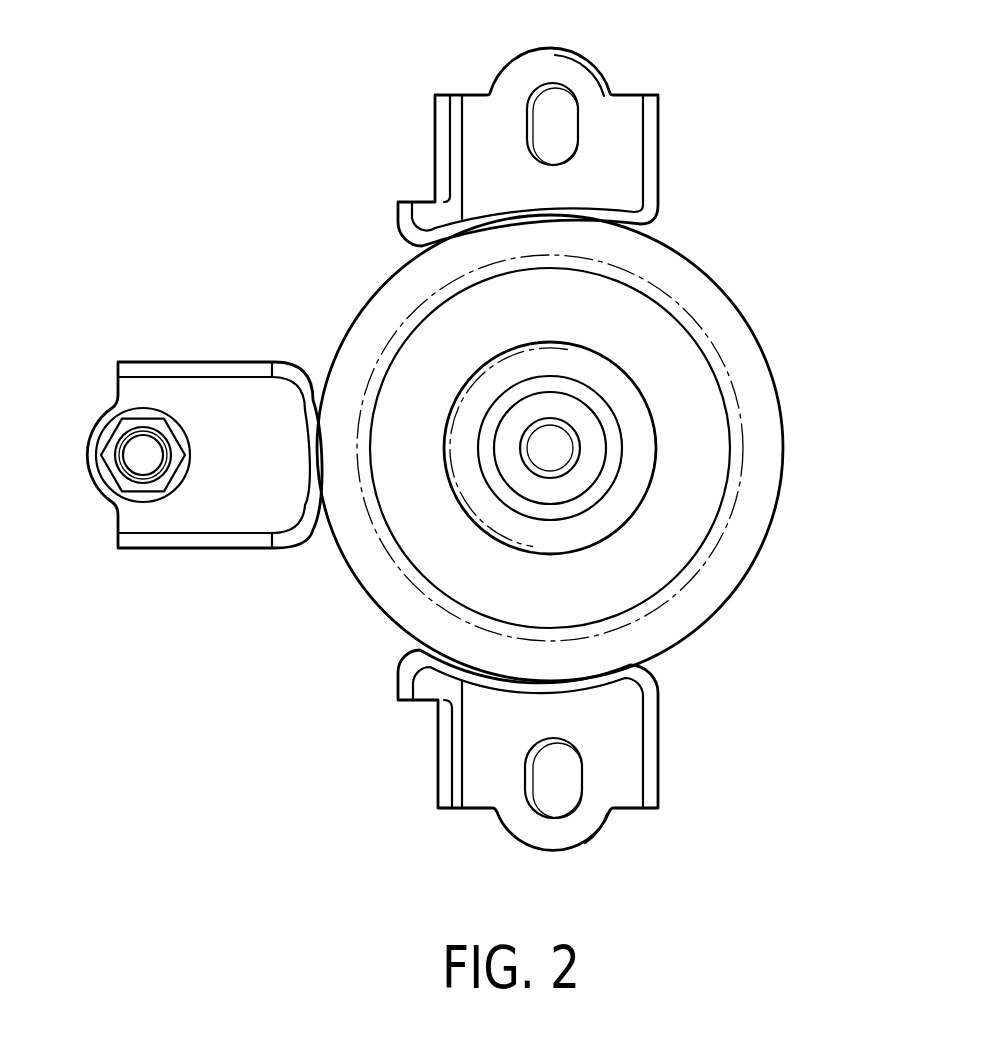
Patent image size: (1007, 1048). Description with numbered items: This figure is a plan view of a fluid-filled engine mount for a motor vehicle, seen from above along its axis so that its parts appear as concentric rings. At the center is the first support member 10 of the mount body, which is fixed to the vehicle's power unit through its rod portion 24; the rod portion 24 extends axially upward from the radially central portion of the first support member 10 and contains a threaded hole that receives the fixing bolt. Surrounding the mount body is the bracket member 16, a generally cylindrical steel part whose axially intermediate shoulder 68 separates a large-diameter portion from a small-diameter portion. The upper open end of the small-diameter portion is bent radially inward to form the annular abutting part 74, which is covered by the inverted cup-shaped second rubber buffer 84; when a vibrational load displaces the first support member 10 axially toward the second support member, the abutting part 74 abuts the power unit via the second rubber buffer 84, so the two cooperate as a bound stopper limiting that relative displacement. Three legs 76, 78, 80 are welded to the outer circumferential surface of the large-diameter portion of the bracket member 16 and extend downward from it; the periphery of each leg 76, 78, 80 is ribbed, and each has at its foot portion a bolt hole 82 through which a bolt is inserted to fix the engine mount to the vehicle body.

The first support member 10 is at (618, 421).
The bracket member 16 is at (692, 241).
The rod portion 24 is at (522, 483).
The shoulder 68 is at (745, 540).
The annular abutting part 74 is at (405, 520).
The leg 76 is at (682, 134).
The leg 78 is at (203, 338).
The leg 80 is at (414, 780).
The bolt hole 82 is at (537, 92).
The second rubber buffer 84 is at (712, 585).